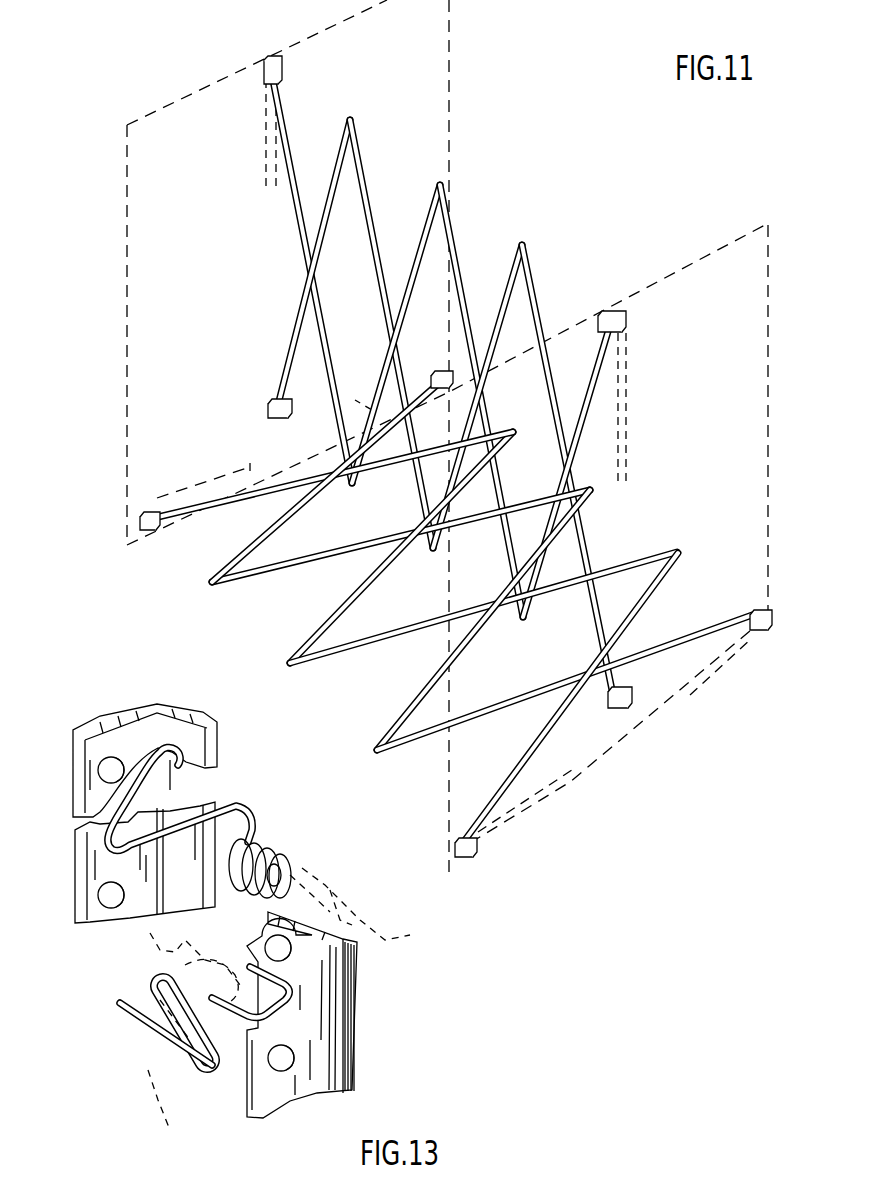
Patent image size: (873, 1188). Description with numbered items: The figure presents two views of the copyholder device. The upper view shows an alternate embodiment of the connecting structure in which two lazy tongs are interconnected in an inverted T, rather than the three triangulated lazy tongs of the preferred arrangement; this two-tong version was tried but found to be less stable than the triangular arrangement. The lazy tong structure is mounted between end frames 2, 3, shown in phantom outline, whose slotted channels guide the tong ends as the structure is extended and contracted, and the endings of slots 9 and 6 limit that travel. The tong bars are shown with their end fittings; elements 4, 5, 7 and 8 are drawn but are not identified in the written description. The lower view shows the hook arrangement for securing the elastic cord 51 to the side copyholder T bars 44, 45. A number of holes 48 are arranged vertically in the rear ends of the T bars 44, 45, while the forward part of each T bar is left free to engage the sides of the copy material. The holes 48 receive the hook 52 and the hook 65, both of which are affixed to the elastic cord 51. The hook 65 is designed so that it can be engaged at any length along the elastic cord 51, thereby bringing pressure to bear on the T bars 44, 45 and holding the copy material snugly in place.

In FIG. 11, the end frame 2 is at (656, 712).
In FIG. 11, the end frame 3 is at (205, 98).
In FIG. 11, the upper scissor rods 4 is at (452, 245).
In FIG. 11, the end cap 5 is at (152, 532).
In FIG. 11, the slot 6 is at (203, 490).
In FIG. 11, the rod 7 is at (363, 641).
In FIG. 11, the end cap 8 is at (272, 58).
In FIG. 11, the slot 9 is at (266, 170).
In FIG. 13, the side copyholder T bar 44 is at (332, 1053).
In FIG. 13, the side copyholder T bar 45 is at (125, 737).
In FIG. 13, the holes 48 is at (98, 890).
In FIG. 13, the elastic cord 51 is at (336, 895).
In FIG. 13, the hook 52 is at (231, 808).
In FIG. 13, the hook 65 is at (218, 1080).